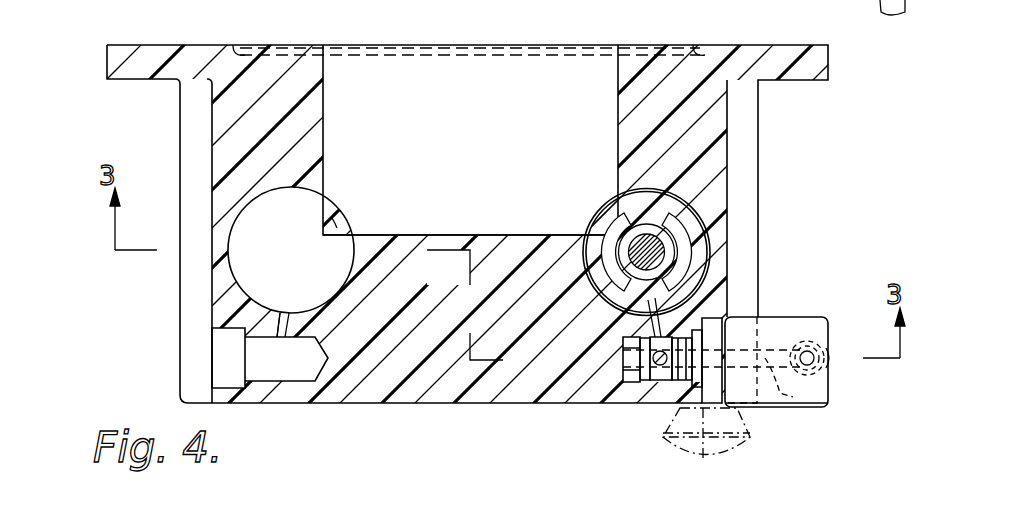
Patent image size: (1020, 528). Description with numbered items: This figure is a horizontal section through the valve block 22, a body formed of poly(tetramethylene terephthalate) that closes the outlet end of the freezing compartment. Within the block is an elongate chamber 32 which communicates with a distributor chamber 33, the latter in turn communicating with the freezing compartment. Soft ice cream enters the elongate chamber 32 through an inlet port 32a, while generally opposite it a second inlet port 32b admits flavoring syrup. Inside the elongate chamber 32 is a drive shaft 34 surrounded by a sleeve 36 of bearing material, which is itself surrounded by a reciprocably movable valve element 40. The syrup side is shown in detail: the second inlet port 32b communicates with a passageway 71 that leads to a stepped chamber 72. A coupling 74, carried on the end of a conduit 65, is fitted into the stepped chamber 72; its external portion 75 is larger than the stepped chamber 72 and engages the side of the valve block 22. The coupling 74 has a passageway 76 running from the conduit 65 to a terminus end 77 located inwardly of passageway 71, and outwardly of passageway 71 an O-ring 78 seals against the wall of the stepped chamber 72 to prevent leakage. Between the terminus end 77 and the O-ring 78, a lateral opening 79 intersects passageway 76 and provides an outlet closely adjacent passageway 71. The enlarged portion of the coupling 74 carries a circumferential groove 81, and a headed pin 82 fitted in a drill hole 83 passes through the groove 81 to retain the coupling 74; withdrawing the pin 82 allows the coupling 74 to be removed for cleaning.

The valve block 22 is at (781, 171).
The elongate chamber 32 is at (258, 197).
The inlet port 32a is at (337, 230).
The second inlet port 32b is at (278, 313).
The distributor chamber 33 is at (462, 157).
The drive shaft 34 is at (693, 230).
The sleeve 36 is at (646, 232).
The valve element 40 is at (607, 207).
The conduit 65 is at (822, 352).
The passageway 71 is at (308, 334).
The stepped chamber 72 is at (285, 376).
The coupling 74 is at (781, 422).
The external portion 75 is at (770, 327).
The passageway 76 is at (794, 384).
The terminus end 77 is at (623, 362).
The O-ring 78 is at (680, 382).
The lateral opening 79 is at (655, 365).
The circumferential groove 81 is at (722, 318).
The headed pin 82 is at (706, 460).
The drill hole 83 is at (690, 445).